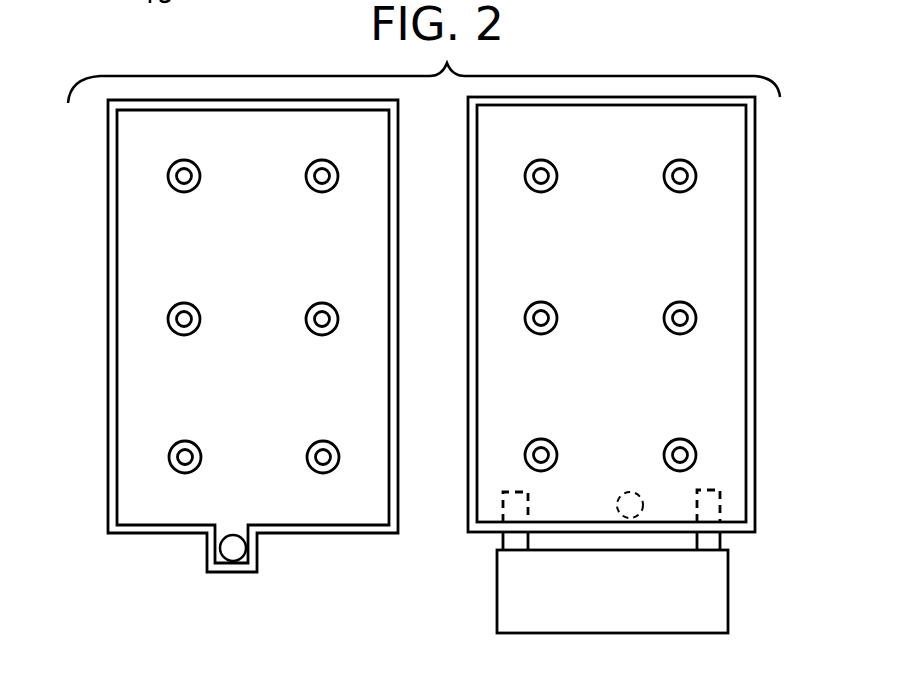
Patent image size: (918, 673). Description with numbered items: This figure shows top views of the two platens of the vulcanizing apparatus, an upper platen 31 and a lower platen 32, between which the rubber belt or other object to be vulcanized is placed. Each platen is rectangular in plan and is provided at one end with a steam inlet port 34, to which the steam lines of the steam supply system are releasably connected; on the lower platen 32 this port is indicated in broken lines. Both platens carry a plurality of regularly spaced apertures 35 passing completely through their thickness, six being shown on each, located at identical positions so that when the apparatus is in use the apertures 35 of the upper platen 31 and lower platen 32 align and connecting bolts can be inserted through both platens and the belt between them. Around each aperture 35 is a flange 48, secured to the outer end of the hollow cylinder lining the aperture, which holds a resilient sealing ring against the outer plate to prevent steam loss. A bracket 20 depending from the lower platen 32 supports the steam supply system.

The bracket 20 is at (728, 598).
The upper platen 31 is at (108, 272).
The lower platen 32 is at (755, 155).
The steam inlet port 34 is at (237, 548).
The aperture 35 is at (182, 323).
The flange 48 is at (168, 457).